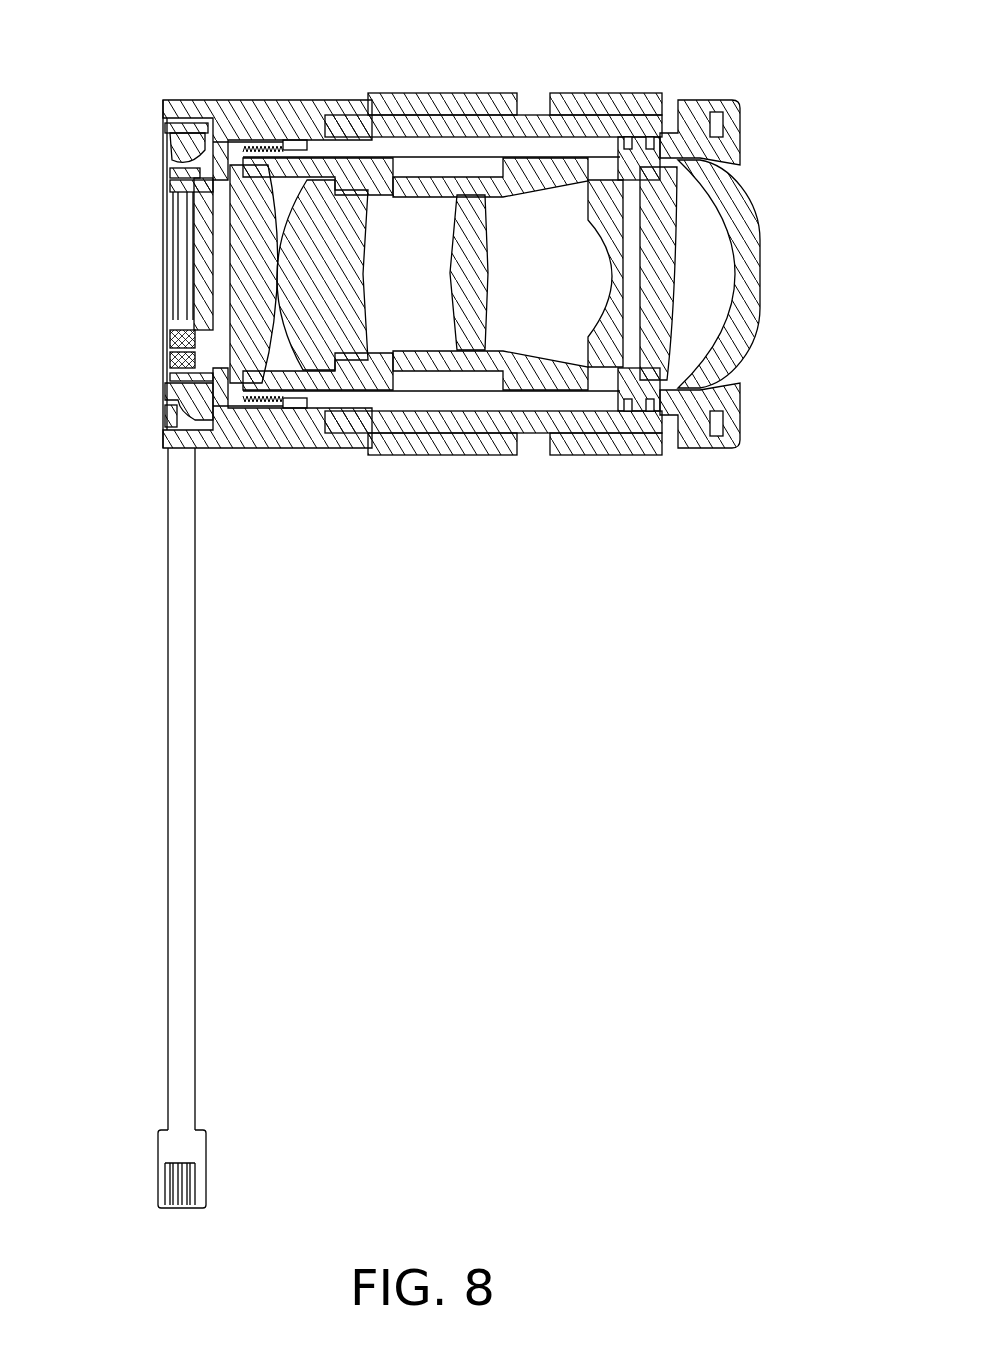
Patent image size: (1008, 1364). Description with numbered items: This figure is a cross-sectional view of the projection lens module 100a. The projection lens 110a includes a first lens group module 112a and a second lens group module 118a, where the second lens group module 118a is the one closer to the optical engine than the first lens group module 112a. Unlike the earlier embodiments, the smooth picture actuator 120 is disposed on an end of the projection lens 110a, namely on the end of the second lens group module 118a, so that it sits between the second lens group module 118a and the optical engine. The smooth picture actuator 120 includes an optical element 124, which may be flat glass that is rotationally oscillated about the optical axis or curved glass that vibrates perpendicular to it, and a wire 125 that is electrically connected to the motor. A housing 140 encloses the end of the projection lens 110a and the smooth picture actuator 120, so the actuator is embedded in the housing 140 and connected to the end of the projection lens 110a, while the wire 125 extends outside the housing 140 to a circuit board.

The projection lens module 100a is at (798, 609).
The projection lens 110a is at (530, 92).
The first lens group module 112a is at (762, 243).
The second lens group module 118a is at (227, 160).
The smooth picture actuator 120 is at (137, 275).
The optical element 124 is at (200, 257).
The wire 125 is at (186, 673).
The housing 140 is at (290, 437).